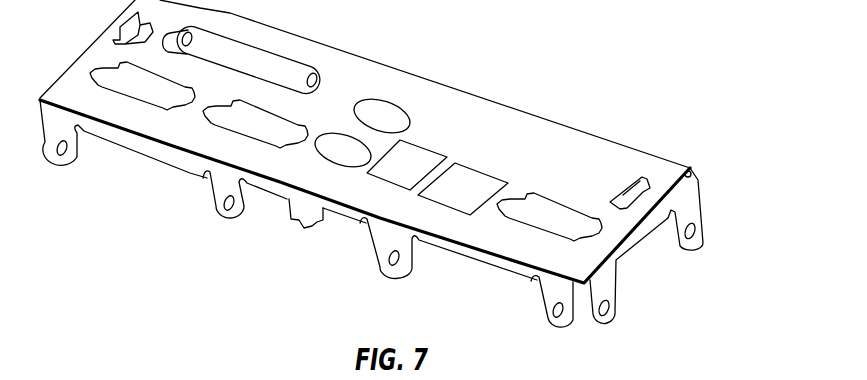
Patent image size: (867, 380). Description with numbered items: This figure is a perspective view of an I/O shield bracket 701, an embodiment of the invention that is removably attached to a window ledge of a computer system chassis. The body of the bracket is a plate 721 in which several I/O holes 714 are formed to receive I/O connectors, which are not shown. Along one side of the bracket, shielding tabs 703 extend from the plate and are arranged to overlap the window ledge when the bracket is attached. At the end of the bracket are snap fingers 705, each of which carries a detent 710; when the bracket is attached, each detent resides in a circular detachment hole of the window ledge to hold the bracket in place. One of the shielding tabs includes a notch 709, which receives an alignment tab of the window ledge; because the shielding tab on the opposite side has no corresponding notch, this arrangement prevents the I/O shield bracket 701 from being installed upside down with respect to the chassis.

The I/O shield bracket 701 is at (365, 141).
The shielding tabs 703 is at (354, 217).
The snap fingers 705 is at (718, 231).
The notch 709 is at (293, 231).
The detent 710 is at (726, 208).
The I/O holes 714 is at (413, 153).
The plate 721 is at (517, 165).